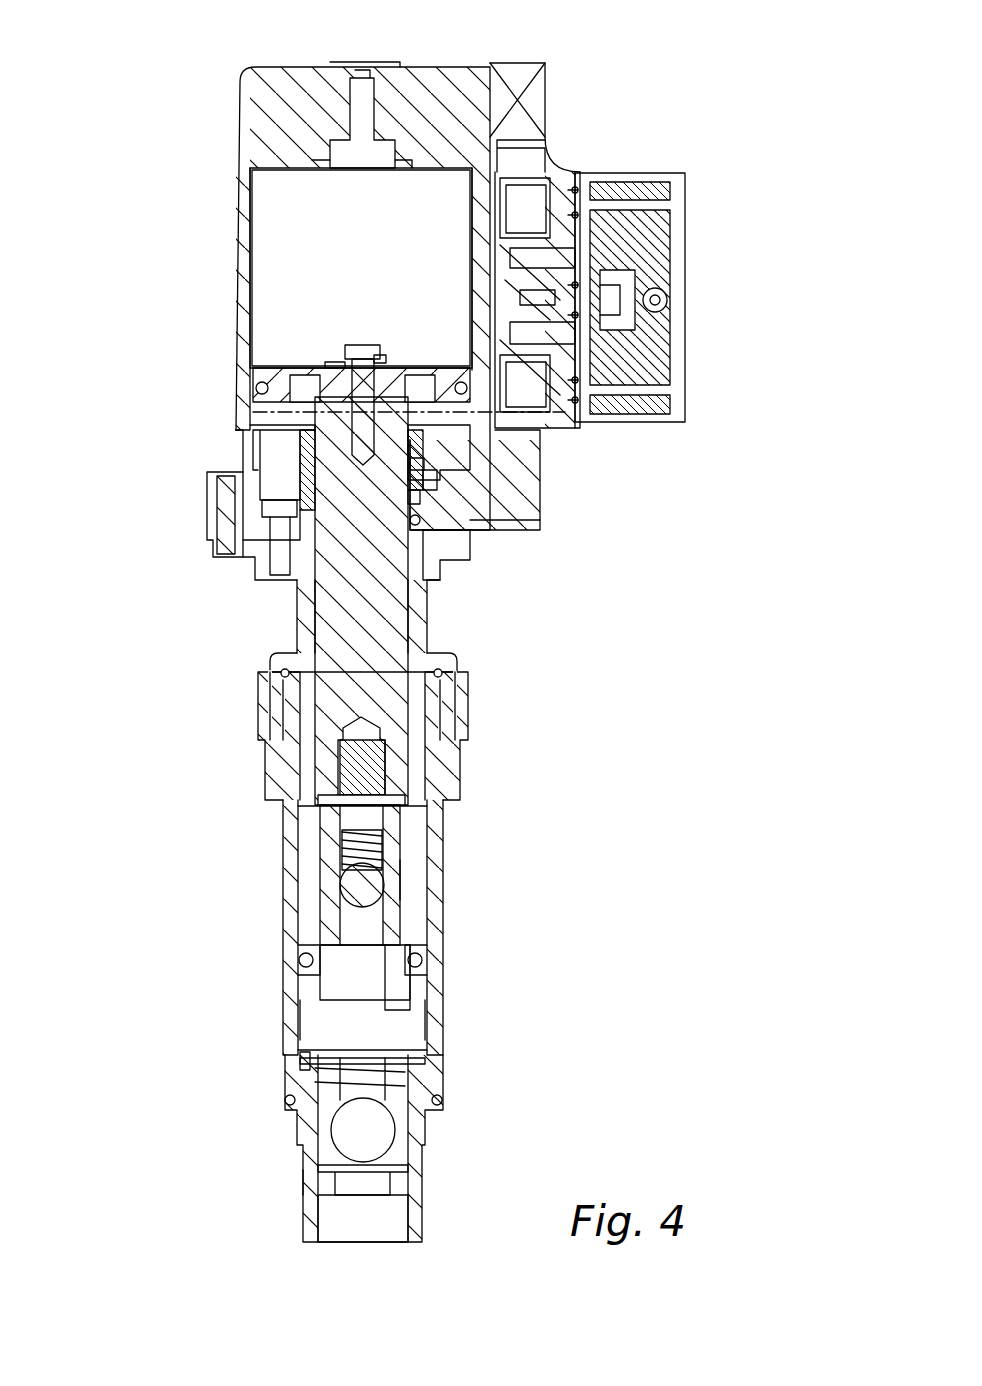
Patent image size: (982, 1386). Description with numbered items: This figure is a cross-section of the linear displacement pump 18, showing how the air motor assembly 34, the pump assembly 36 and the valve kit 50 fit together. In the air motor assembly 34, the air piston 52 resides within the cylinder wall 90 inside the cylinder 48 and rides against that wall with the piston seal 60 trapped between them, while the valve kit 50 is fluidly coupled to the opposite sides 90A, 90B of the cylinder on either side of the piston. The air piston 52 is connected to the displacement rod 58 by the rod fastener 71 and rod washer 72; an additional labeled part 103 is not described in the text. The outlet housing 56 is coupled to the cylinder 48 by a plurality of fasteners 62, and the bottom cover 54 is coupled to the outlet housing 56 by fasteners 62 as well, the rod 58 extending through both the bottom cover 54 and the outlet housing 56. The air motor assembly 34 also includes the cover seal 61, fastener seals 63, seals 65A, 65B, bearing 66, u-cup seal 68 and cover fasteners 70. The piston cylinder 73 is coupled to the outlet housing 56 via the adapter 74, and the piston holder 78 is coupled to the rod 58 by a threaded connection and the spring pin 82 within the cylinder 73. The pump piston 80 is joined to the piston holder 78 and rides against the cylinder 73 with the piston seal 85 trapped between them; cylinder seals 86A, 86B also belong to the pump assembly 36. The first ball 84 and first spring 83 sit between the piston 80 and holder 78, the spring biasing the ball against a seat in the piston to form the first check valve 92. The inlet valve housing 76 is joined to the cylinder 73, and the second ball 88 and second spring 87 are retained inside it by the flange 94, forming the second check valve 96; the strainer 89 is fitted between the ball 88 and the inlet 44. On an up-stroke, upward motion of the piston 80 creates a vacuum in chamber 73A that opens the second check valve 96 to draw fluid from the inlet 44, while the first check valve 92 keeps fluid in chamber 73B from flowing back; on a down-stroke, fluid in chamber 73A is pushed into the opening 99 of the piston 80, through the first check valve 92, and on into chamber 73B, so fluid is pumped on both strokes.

The linear displacement pump 18 is at (658, 108).
The air motor assembly 34 is at (232, 120).
The cylinder 48 is at (415, 75).
The valve kit 50 is at (700, 188).
The cylinder wall 90 is at (265, 212).
The first side of cylinder 90A is at (361, 268).
The second side of cylinder 90B is at (258, 395).
The piston seal 60 is at (258, 385).
The air piston 52 is at (330, 370).
The bolt head 103 is at (352, 355).
The rod fastener 71 is at (368, 348).
The rod washer 72 is at (385, 358).
The displacement rod 58 is at (355, 627).
The seal 65A is at (305, 440).
The bottom cover 54 is at (300, 462).
The cover fasteners 70 is at (238, 486).
The fastener seals 63 is at (235, 526).
The fasteners 62 is at (278, 548).
The cover seal 61 is at (420, 465).
The bearing 66 is at (430, 486).
The u-cup seal 68 is at (412, 497).
The seal 65B is at (418, 523).
The outlet housing 56 is at (427, 640).
The adapter 74 is at (462, 786).
The cylinder seal 86A is at (448, 720).
The spring pin 82 is at (398, 770).
The pump assembly 36 is at (447, 908).
The chamber 73B is at (430, 934).
The cylinder 73 is at (438, 1022).
The chamber 73A is at (362, 1021).
The piston holder 78 is at (398, 845).
The first spring 83 is at (340, 843).
The first ball 84 is at (345, 880).
The first check valve 92 is at (410, 872).
The pump piston 80 is at (310, 942).
The piston seal 85 is at (412, 964).
The opening 99 is at (365, 977).
The second spring 87 is at (405, 1068).
The flange 94 is at (305, 1056).
The cylinder seal 86B is at (290, 1102).
The second ball 88 is at (380, 1128).
The inlet valve housing 76 is at (410, 1146).
The second check valve 96 is at (305, 1183).
The strainer 89 is at (375, 1178).
The inlet 44 is at (385, 1226).